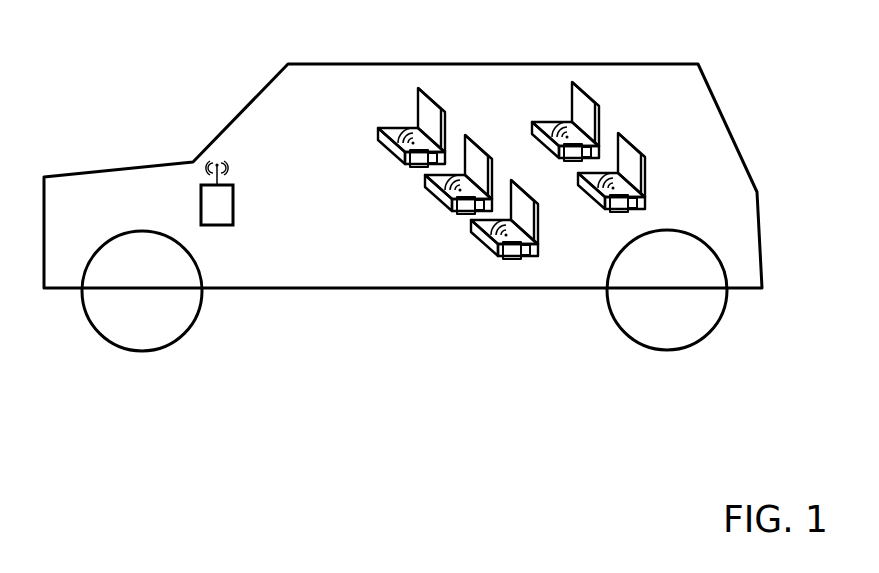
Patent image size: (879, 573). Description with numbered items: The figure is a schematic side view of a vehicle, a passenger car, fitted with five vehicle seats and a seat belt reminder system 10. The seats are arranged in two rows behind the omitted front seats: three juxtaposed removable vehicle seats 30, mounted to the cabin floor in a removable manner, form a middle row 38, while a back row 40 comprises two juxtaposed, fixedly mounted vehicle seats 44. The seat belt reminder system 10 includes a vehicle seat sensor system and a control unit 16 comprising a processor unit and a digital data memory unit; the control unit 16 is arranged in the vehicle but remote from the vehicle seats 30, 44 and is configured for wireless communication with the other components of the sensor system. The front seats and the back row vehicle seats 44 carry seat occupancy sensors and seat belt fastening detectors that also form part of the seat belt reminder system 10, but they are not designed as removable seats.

The seat belt reminder system 10 is at (277, 270).
The control unit 16 is at (192, 197).
The removable vehicle seat 30 is at (427, 92).
The middle row 38 is at (395, 200).
The fixedly mounted vehicle seat 44 is at (580, 80).
The back row 40 is at (662, 192).